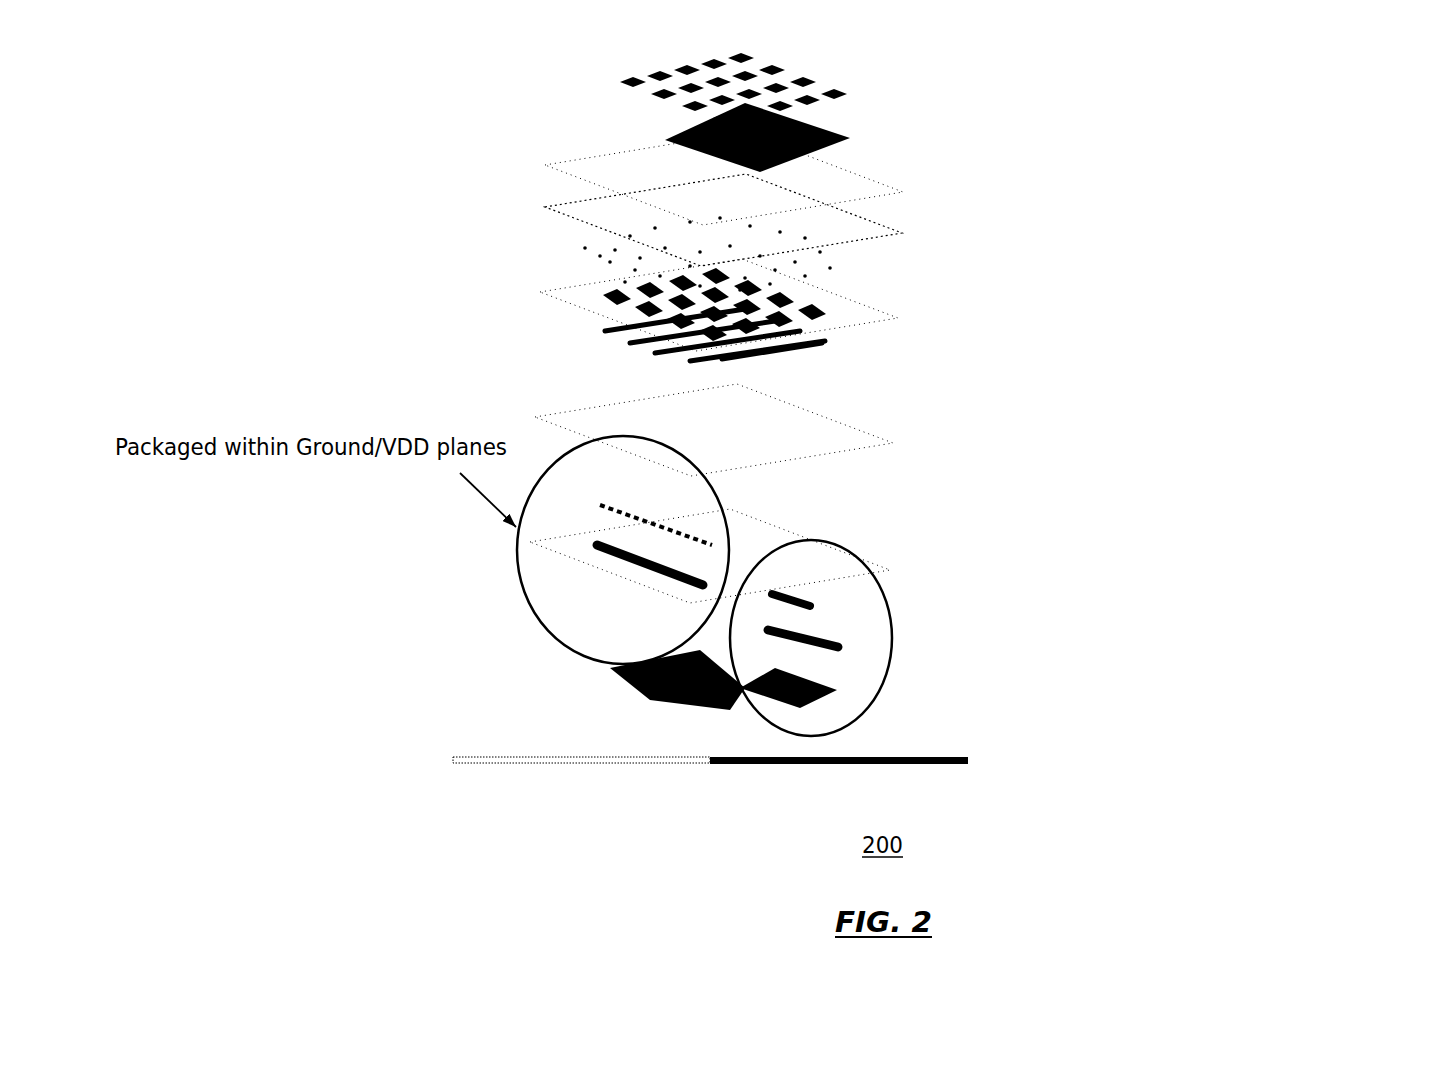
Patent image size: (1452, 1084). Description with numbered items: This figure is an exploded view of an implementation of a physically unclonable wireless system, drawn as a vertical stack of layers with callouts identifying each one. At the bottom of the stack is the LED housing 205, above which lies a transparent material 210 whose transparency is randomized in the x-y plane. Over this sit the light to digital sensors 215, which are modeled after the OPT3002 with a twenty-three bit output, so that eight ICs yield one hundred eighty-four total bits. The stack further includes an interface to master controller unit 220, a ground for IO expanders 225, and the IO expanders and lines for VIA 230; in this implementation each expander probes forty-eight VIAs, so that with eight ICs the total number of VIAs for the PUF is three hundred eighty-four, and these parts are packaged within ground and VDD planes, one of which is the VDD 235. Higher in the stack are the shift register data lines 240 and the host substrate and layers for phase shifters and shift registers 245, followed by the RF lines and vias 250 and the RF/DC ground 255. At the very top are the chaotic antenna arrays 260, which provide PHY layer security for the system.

The LED housing 205 is at (838, 699).
The transparent material 210 is at (828, 653).
The light to digital sensors 215 is at (898, 600).
The interface to master controller unit 220 is at (678, 699).
The ground for IO expanders 225 is at (588, 617).
The IO expanders and lines for VIA 230 is at (470, 304).
The VDD 235 is at (903, 440).
The shift register data lines 240 is at (848, 349).
The host substrate(s) and layers for phase shifters and shift registers 245 is at (913, 316).
The RF lines and vias 250 is at (933, 236).
The RF/DC ground 255 is at (928, 188).
The chaotic antenna arrays 260 is at (850, 92).